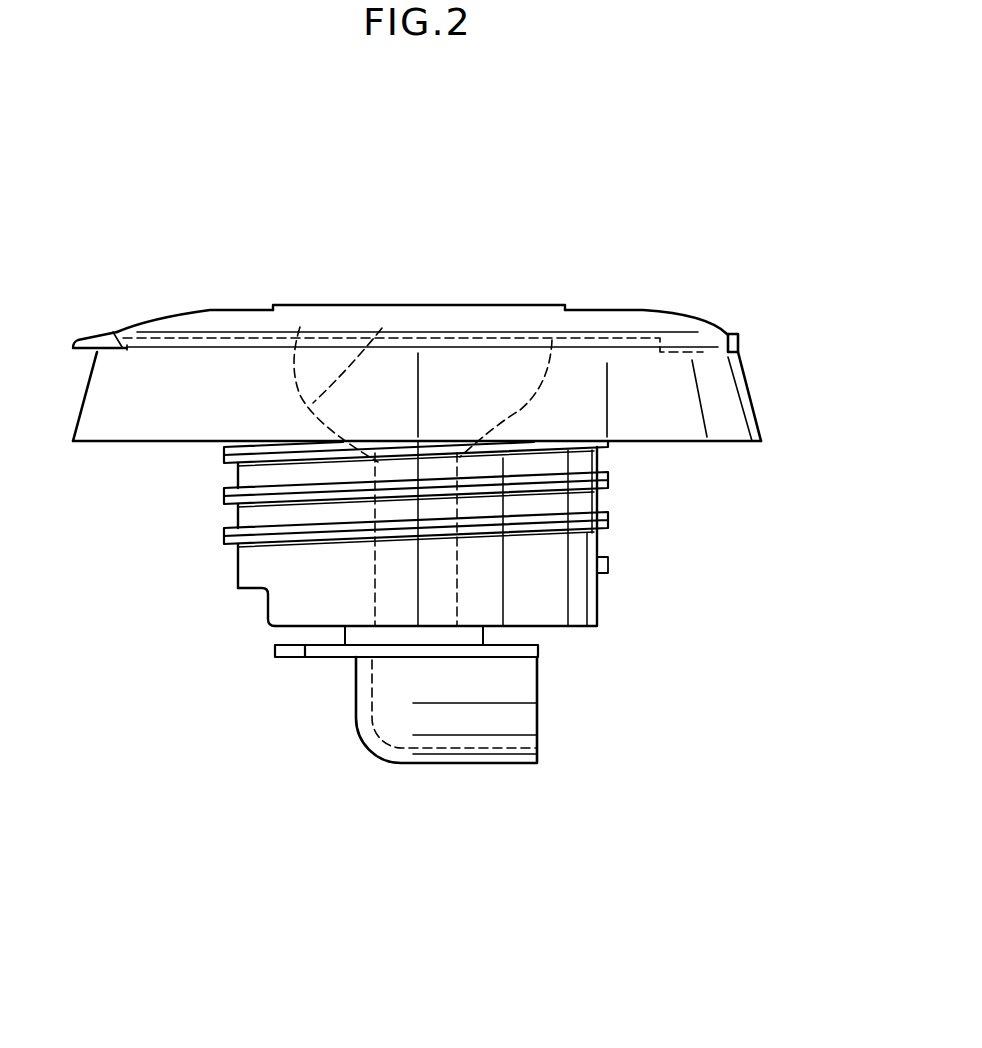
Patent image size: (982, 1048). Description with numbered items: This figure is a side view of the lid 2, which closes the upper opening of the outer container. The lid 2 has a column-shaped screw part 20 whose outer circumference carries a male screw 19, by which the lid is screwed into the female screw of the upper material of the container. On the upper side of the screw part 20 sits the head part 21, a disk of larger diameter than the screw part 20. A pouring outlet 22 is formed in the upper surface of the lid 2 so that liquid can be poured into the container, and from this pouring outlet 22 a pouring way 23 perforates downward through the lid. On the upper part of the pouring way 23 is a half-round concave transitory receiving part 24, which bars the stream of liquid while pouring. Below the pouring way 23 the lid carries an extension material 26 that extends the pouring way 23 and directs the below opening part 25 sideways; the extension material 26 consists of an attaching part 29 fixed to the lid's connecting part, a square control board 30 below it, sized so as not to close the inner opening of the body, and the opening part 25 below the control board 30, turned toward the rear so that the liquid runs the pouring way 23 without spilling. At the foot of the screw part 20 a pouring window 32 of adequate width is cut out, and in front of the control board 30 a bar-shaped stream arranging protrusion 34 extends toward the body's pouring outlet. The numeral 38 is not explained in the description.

The lid 2 is at (727, 230).
The male screw 19 is at (612, 521).
The screw part 20 is at (577, 596).
The head part 21 is at (755, 402).
The pouring outlet 22 is at (300, 325).
The pouring way 23 is at (405, 560).
The transitory receiving part 24 is at (382, 328).
The below opening part 25 is at (537, 713).
The extension material 26 is at (415, 767).
The attaching part 29 is at (490, 631).
The control board 30 is at (458, 660).
The pouring window 32 is at (247, 600).
The stream arranging protrusion 34 is at (273, 656).
The top plate 38 is at (527, 305).